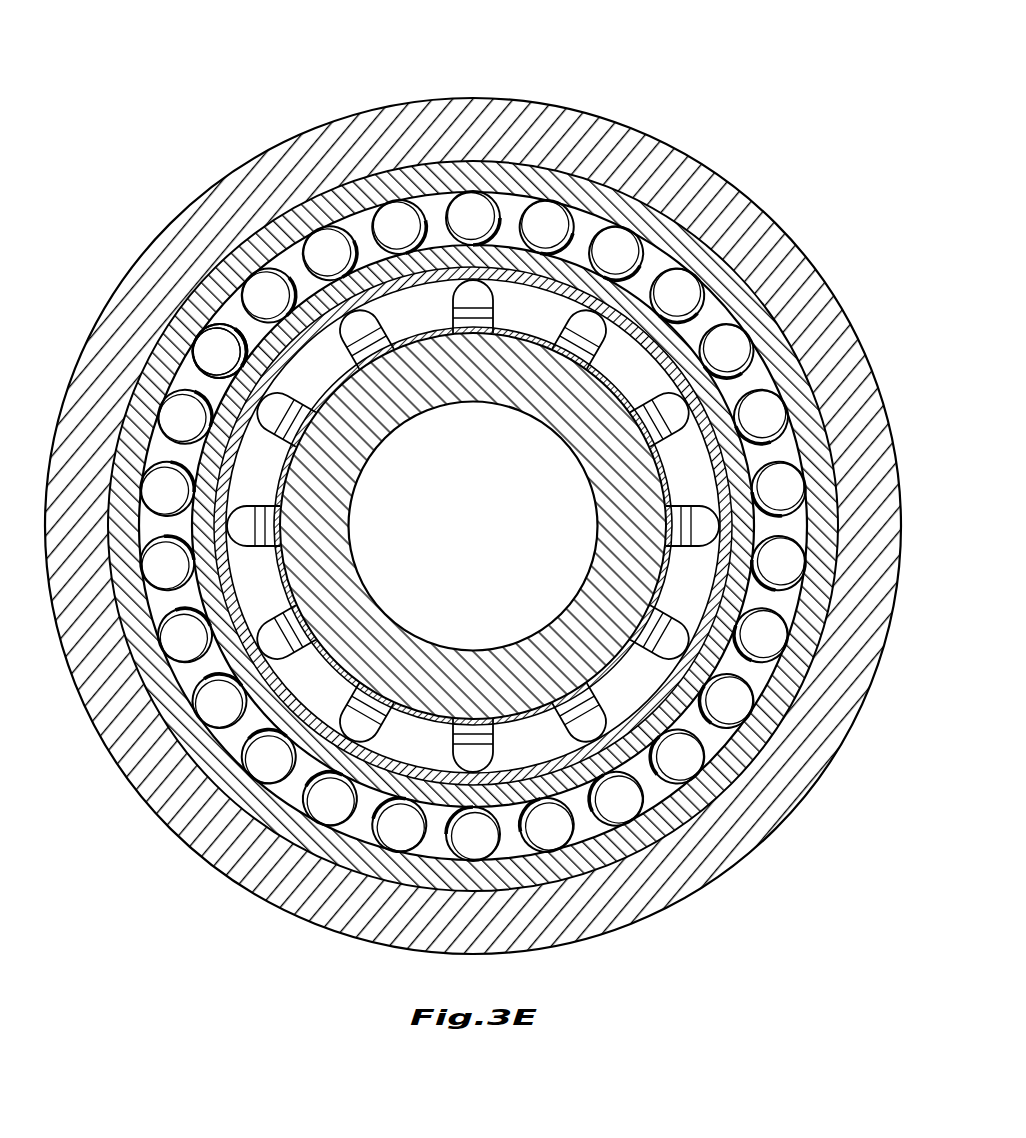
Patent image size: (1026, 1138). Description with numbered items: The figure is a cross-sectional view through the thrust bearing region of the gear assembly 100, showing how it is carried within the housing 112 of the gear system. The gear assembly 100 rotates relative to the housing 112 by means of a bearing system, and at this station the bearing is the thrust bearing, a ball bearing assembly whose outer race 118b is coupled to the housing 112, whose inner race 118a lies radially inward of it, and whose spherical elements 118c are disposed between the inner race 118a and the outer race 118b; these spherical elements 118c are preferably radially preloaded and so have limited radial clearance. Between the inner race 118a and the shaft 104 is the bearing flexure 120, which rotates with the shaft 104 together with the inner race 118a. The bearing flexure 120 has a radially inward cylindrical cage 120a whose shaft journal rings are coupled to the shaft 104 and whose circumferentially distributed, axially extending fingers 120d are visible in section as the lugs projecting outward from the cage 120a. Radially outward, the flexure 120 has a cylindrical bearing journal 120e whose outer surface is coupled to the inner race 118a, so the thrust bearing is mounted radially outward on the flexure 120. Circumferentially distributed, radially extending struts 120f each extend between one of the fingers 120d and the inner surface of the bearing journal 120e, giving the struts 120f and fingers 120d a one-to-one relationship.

The housing 112 is at (473, 122).
The inner race 118a is at (722, 395).
The outer race 118b is at (675, 233).
The spherical elements 118c is at (735, 340).
The bearing flexure 120 is at (569, 283).
The cylindrical cage 120a is at (330, 258).
The fingers 120d is at (373, 210).
The cylindrical bearing journal 120e is at (240, 363).
The struts 120f is at (334, 368).
The gear assembly 100 is at (349, 529).
The shaft 104 is at (357, 603).